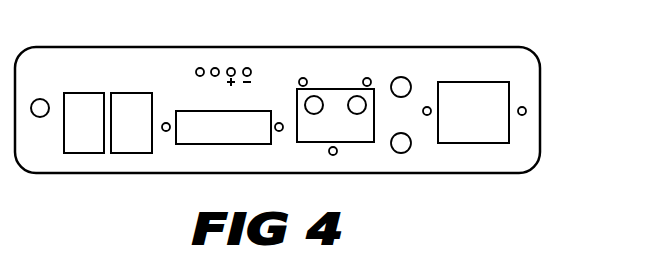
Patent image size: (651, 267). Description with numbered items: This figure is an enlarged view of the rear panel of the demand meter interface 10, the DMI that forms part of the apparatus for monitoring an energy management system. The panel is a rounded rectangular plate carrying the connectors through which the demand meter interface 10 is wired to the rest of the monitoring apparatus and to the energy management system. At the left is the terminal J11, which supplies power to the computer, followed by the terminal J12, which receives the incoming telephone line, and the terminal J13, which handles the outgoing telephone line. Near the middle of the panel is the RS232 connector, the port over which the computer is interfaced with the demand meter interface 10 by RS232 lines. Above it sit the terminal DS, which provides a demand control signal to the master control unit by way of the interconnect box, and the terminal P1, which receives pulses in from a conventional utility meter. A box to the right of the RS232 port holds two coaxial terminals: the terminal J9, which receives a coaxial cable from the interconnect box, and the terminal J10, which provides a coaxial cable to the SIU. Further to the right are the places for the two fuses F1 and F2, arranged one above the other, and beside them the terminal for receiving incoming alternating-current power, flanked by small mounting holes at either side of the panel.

The demand meter interface 10 is at (277, 89).
The terminal J11 is at (39, 120).
The terminal J12 is at (84, 123).
The terminal J13 is at (131, 123).
The RS232 lines RS232 is at (223, 127).
The terminal DS is at (207, 62).
The terminal PI P1 is at (239, 67).
The terminal J9 is at (314, 116).
The terminal J10 is at (354, 116).
The fuse F1 is at (401, 87).
The fuse F2 is at (401, 143).